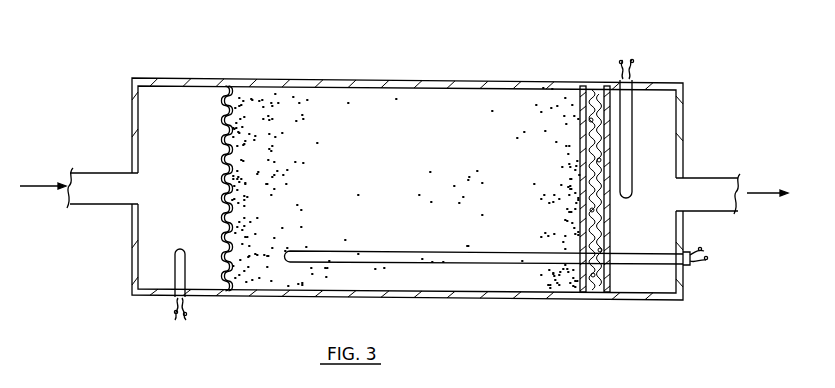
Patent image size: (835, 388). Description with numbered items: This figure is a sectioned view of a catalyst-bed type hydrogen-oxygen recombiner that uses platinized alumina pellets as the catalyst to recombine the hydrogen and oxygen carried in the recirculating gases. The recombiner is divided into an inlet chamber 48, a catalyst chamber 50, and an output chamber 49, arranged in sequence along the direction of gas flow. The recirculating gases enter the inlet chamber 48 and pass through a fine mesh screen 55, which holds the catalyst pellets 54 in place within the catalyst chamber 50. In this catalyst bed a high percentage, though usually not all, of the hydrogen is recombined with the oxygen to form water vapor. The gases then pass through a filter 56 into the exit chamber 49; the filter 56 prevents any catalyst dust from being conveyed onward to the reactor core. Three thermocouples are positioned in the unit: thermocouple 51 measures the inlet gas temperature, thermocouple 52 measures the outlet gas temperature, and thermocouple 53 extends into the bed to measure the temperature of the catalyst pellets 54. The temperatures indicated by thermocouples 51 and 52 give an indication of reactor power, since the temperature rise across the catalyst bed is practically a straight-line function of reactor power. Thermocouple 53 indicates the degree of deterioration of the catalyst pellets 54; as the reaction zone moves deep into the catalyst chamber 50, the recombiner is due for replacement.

The inlet chamber 48 is at (182, 103).
The output chamber 49 is at (657, 138).
The catalyst chamber 50 is at (418, 135).
The thermocouple 51 is at (182, 277).
The thermocouple 52 is at (628, 98).
The thermocouple 53 is at (463, 257).
The catalyst pellets 54 is at (260, 100).
The fine mesh screen 55 is at (224, 280).
The filter 56 is at (591, 90).